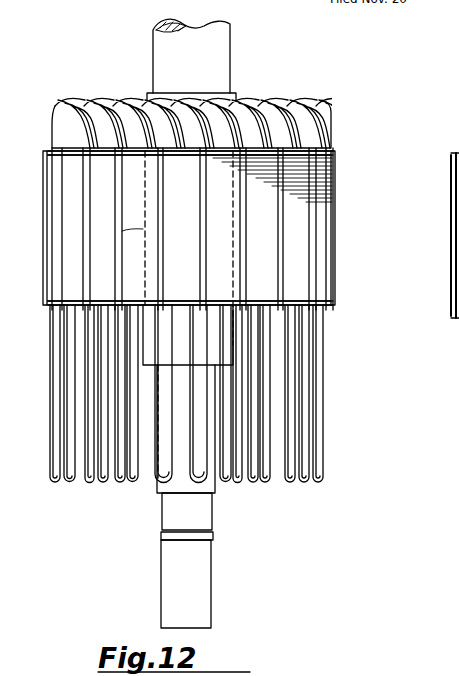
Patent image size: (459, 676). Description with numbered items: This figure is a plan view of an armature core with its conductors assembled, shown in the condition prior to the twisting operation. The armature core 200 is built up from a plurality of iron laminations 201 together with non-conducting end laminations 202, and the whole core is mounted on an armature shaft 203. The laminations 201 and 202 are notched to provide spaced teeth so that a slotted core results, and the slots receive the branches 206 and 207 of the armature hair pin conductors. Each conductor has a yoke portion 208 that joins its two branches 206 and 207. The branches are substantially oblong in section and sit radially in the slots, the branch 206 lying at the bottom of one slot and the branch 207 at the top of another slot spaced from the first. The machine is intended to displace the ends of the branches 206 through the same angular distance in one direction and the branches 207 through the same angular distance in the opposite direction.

The armature core 200 is at (338, 252).
The iron laminations 201 is at (336, 158).
The non-conducting end laminations 202 is at (333, 153).
The armature shaft 203 is at (232, 54).
The branch of armature hair pin conductor 206 is at (138, 483).
The branch of armature hair pin conductor 207 is at (293, 483).
The yoke portion 208 is at (222, 102).